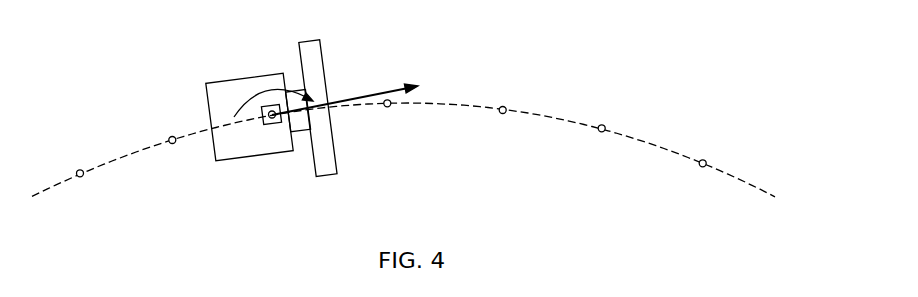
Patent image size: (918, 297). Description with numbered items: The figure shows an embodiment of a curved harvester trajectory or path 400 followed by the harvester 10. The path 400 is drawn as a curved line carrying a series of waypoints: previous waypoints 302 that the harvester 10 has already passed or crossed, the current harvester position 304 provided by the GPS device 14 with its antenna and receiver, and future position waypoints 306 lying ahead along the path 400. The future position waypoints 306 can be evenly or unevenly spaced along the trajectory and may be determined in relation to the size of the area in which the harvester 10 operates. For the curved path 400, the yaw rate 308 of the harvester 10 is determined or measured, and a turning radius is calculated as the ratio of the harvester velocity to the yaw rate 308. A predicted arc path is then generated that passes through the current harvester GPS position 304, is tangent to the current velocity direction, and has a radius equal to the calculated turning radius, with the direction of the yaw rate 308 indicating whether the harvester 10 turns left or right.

The harvester 10 is at (181, 50).
The GPS device 14 is at (278, 128).
The previous waypoints 302 is at (80, 178).
The current harvester position 304 is at (270, 124).
The future position waypoints 306 is at (385, 108).
The yaw rate 308 is at (262, 95).
The curved harvester trajectory or path 400 is at (743, 180).